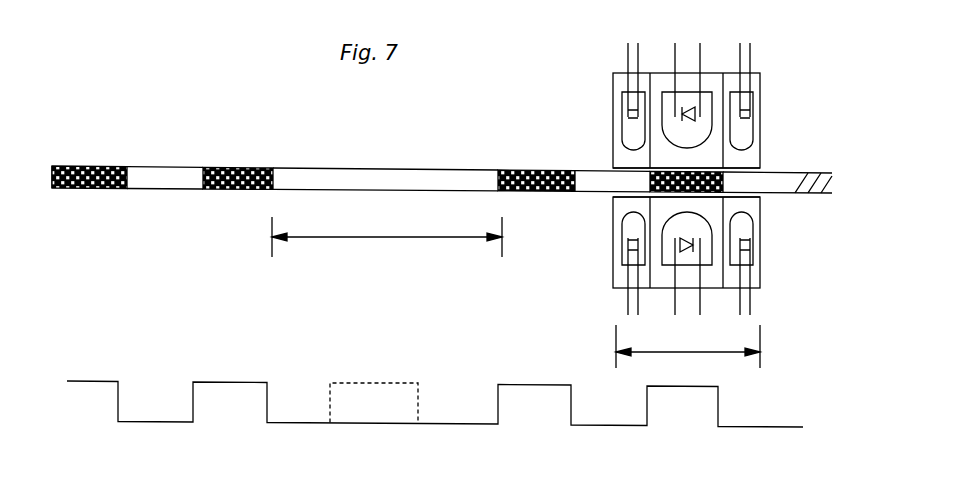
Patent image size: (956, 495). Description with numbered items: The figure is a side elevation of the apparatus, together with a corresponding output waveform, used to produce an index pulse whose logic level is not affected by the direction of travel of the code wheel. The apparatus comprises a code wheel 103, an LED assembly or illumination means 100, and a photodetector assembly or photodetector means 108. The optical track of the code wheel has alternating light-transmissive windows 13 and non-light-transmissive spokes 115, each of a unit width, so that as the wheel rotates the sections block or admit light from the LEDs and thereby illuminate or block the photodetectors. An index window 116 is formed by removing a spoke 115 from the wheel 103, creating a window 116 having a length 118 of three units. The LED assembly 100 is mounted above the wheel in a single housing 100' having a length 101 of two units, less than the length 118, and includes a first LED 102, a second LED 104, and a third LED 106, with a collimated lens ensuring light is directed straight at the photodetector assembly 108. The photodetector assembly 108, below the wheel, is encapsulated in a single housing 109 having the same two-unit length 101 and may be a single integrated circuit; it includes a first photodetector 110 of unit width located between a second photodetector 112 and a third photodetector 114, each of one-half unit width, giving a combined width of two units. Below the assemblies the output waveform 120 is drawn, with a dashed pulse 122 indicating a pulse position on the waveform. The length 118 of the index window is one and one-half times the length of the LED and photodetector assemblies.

The light-transmissive section 13 is at (170, 172).
The LED assembly 100 is at (745, 103).
The housing 100' is at (729, 120).
The length 101 is at (722, 353).
The first LED 102 is at (676, 112).
The code wheel 103 is at (108, 224).
The second LED 104 is at (633, 133).
The third LED 106 is at (750, 118).
The photodetector assembly 108 is at (790, 294).
The housing 109 is at (757, 262).
The first photodetector 110 is at (687, 257).
The second photodetector 112 is at (628, 226).
The third photodetector 114 is at (745, 240).
The spoke 115 is at (208, 188).
The index window 116 is at (378, 178).
The length 118 is at (366, 240).
The output signal waveform 120 is at (72, 383).
The missing pulse 122 is at (305, 437).